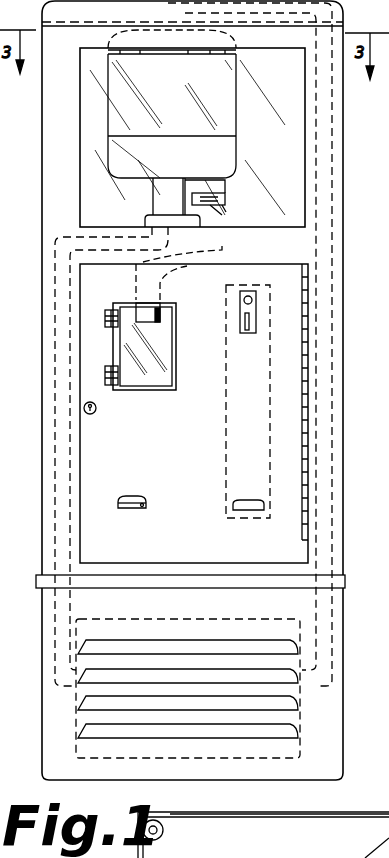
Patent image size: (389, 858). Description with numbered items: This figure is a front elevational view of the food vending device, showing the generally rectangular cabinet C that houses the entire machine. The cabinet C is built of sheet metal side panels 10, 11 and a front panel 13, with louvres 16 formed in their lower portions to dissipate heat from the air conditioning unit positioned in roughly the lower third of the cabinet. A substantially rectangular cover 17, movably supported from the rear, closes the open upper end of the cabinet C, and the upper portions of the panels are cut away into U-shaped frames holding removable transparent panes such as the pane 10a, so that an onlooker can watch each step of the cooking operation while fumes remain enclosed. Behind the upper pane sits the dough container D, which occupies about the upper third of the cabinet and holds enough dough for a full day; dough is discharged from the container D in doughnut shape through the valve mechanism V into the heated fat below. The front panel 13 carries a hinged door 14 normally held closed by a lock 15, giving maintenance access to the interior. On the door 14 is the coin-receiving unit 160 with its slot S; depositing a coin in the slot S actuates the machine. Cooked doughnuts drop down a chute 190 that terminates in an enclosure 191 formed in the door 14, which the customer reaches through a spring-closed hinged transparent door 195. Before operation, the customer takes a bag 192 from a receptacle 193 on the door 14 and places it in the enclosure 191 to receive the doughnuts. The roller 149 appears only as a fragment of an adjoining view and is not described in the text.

The side panel 10 is at (40, 374).
The side panel 11 is at (343, 422).
The front panel 13 is at (266, 254).
The hinged door 14 is at (192, 442).
The lock 15 is at (98, 409).
The louvres 16 is at (160, 686).
The cover 17 is at (118, 18).
The chute 190 is at (166, 320).
The enclosure 191 is at (168, 348).
The bag 192 is at (146, 504).
The receptacle 193 is at (120, 509).
The hinged transparent door 195 is at (162, 381).
The coin-receiving unit 160 is at (249, 333).
The roller 149 is at (165, 830).
The transparent pane 10a is at (270, 822).
The dough container D is at (176, 91).
The valve mechanism V is at (226, 184).
The cabinet C is at (38, 204).
The slot S is at (243, 328).